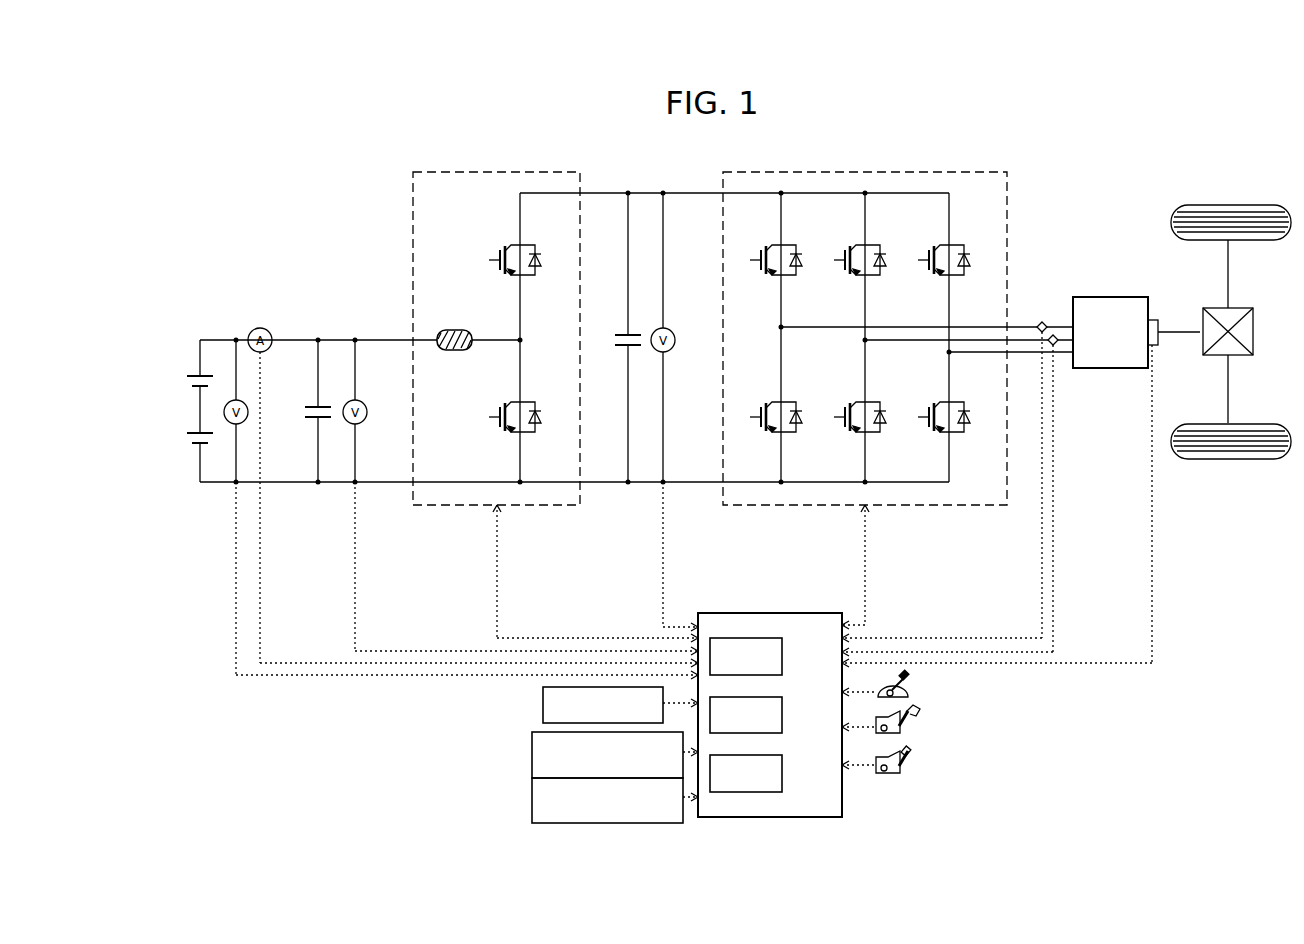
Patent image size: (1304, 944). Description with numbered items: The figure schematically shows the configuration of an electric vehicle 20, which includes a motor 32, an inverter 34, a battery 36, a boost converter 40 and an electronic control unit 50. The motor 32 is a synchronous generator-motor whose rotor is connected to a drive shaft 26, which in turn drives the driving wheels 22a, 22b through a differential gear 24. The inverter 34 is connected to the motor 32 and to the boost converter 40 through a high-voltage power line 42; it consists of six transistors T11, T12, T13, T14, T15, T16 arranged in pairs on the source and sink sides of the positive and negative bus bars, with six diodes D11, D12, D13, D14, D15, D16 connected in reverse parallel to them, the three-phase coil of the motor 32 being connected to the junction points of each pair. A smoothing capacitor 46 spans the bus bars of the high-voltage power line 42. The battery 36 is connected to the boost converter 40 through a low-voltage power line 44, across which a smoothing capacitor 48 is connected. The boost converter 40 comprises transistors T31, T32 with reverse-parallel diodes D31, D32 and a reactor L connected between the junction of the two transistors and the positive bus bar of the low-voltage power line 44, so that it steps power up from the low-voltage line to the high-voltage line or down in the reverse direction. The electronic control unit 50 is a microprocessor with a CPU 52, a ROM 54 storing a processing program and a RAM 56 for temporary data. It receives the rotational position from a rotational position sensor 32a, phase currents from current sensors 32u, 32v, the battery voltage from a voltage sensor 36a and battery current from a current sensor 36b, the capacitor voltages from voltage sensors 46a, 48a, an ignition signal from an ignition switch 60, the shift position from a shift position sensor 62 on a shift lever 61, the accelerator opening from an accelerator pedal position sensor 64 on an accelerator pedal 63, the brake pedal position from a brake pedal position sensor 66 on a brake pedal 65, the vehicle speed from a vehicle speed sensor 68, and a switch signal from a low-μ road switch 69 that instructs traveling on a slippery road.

The electric vehicle 20 is at (1146, 145).
The driving wheel 22a is at (1223, 204).
The driving wheel 22b is at (1222, 460).
The differential gear 24 is at (1237, 307).
The drive shaft 26 is at (1180, 330).
The motor 32 is at (1110, 296).
The rotational position sensor 32a is at (1152, 319).
The current sensor 32u is at (1040, 321).
The current sensor 32v is at (1055, 334).
The inverter 34 is at (864, 172).
The battery 36 is at (196, 374).
The voltage sensor 36a is at (232, 400).
The current sensor 36b is at (261, 328).
The boost converter 40 is at (494, 172).
The high-voltage power line 42 is at (710, 193).
The low-voltage power line 44 is at (397, 340).
The smoothing capacitor 46 is at (624, 332).
The voltage sensor 46a is at (669, 328).
The smoothing capacitor 48 is at (314, 405).
The voltage sensor 48a is at (359, 401).
The electronic control unit 50 is at (768, 612).
The CPU 52 is at (783, 657).
The ROM 54 is at (783, 715).
The RAM 56 is at (783, 773).
The ignition switch 60 is at (542, 703).
The shift lever 61 is at (909, 682).
The shift position sensor 62 is at (907, 693).
The accelerator pedal 63 is at (913, 718).
The accelerator pedal position sensor 64 is at (900, 730).
The brake pedal 65 is at (912, 758).
The brake pedal position sensor 66 is at (900, 770).
The vehicle speed sensor 68 is at (531, 752).
The low-μ road switch 69 is at (531, 798).
The reactor L is at (455, 328).
The transistor T11 is at (765, 250).
The transistor T12 is at (849, 250).
The transistor T13 is at (933, 250).
The transistor T14 is at (765, 407).
The transistor T15 is at (849, 407).
The transistor T16 is at (933, 407).
The diode D11 is at (797, 272).
The diode D12 is at (881, 272).
The diode D13 is at (965, 272).
The diode D14 is at (797, 429).
The diode D15 is at (881, 429).
The diode D16 is at (965, 429).
The transistor T31 is at (503, 258).
The transistor T32 is at (503, 413).
The diode D31 is at (537, 272).
The diode D32 is at (537, 429).